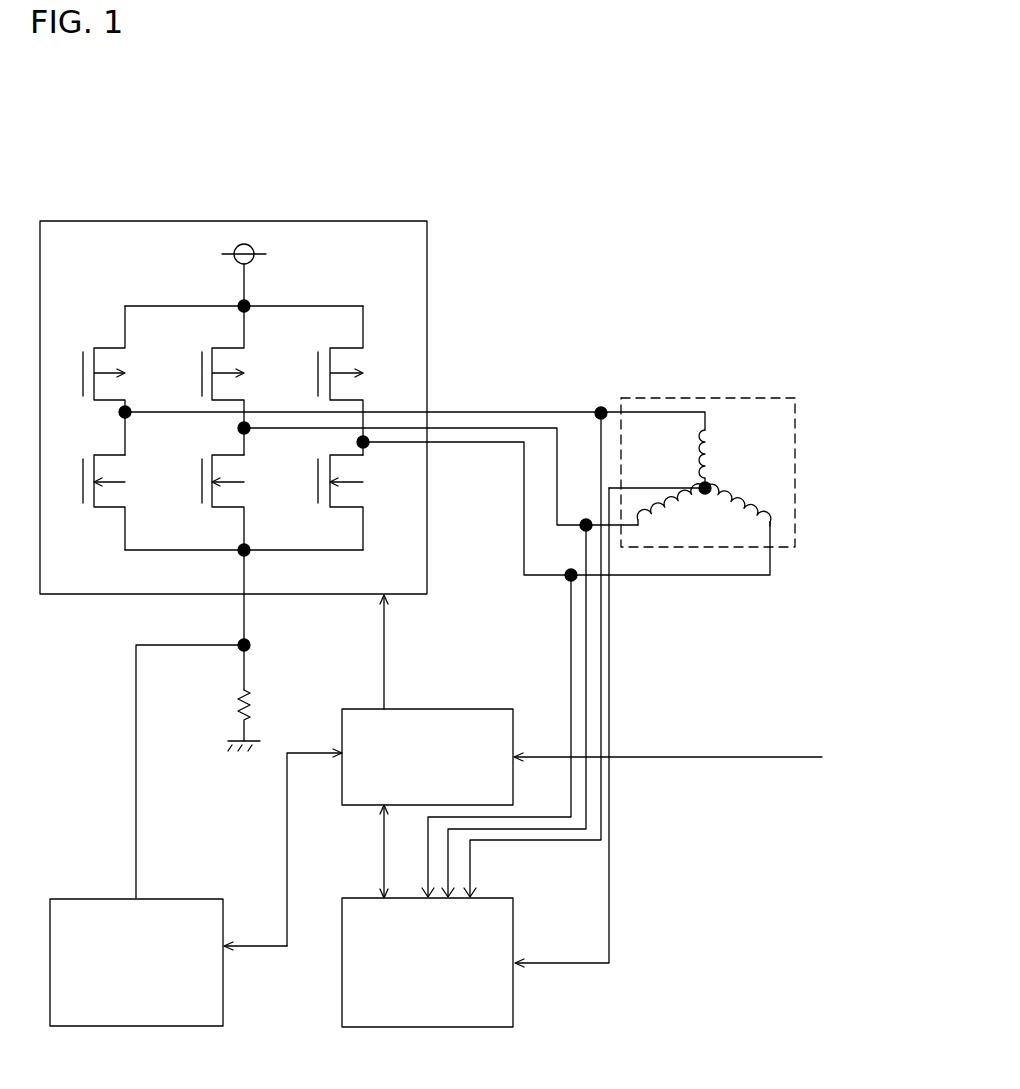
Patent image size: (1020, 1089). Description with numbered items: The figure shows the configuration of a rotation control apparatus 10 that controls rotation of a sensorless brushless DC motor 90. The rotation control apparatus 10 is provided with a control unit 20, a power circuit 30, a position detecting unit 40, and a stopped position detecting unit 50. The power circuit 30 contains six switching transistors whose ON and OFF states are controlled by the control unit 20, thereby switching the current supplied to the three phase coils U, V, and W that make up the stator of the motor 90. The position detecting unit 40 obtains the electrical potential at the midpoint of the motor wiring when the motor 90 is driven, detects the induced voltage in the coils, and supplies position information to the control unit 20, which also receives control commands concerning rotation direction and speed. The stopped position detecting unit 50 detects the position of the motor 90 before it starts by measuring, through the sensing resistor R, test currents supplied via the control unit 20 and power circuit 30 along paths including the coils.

The rotation control apparatus 10 is at (67, 158).
The control unit 20 is at (482, 709).
The power circuit 30 is at (352, 221).
The position detecting unit 40 is at (482, 898).
The stopped position detecting unit 50 is at (190, 899).
The sensorless brushless DC motor 90 is at (742, 398).